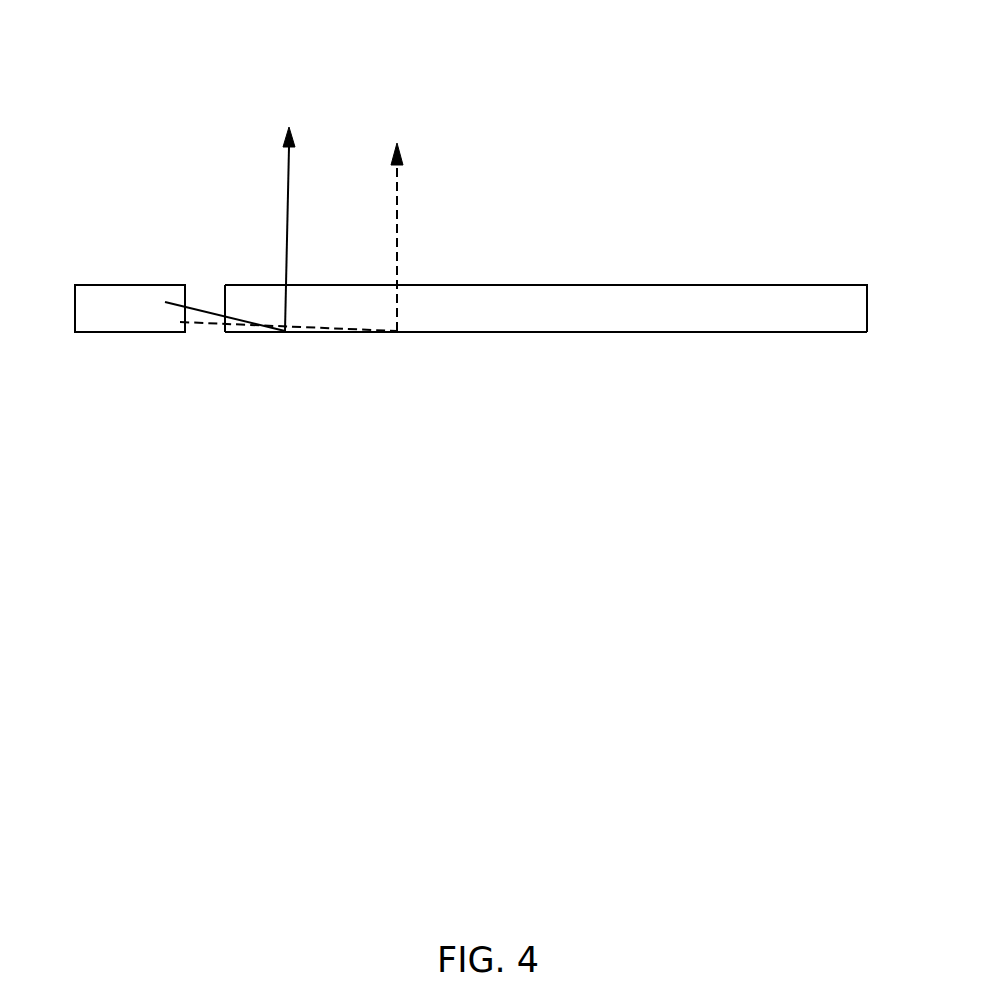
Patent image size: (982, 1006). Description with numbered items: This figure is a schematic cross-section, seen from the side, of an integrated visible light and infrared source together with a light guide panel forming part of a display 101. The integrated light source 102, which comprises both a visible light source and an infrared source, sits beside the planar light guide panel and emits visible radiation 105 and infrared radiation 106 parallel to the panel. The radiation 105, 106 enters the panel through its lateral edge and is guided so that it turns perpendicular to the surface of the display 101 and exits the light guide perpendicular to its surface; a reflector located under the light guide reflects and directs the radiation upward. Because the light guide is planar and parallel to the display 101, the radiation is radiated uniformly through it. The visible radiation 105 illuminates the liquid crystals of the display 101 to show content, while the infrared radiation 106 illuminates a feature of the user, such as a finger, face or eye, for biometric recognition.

The display 101 is at (712, 178).
The integrated light source 102 is at (95, 332).
The visible light radiation 105 is at (290, 128).
The infrared radiation 106 is at (397, 207).